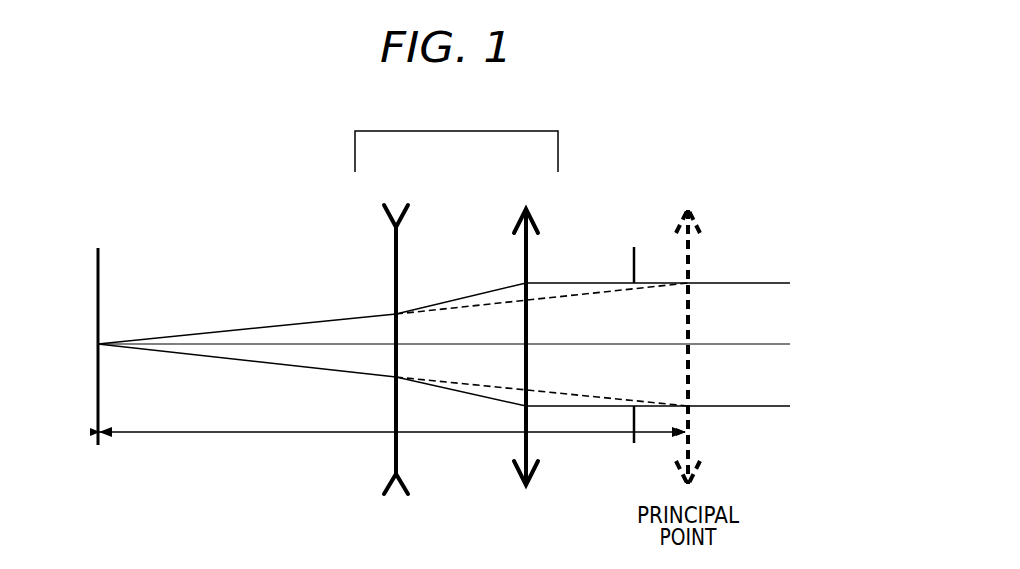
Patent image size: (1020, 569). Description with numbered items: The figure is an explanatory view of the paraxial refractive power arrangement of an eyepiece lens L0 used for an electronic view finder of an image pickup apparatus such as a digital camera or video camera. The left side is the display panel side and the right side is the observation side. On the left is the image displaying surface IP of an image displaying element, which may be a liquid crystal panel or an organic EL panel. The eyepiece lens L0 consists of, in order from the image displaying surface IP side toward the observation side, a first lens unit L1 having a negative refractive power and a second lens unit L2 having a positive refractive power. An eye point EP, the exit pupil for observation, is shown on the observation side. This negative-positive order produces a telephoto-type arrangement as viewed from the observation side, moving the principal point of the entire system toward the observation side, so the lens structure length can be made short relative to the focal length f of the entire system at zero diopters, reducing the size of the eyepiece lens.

The eyepiece lens L0 is at (456, 136).
The first lens unit L1 is at (395, 360).
The second lens unit L2 is at (527, 360).
The image displaying surface IP is at (99, 365).
The eye point EP is at (635, 358).
The focal length f is at (392, 444).